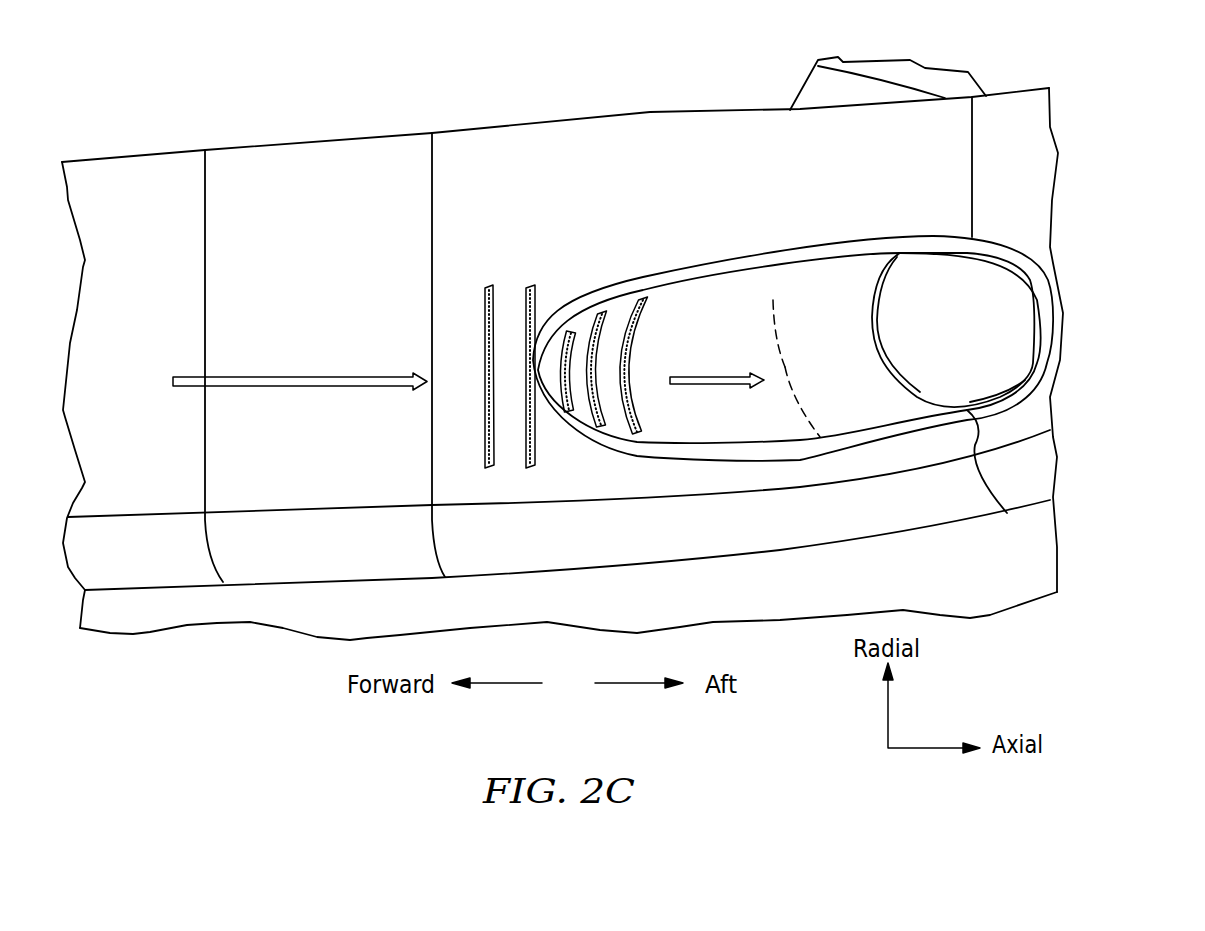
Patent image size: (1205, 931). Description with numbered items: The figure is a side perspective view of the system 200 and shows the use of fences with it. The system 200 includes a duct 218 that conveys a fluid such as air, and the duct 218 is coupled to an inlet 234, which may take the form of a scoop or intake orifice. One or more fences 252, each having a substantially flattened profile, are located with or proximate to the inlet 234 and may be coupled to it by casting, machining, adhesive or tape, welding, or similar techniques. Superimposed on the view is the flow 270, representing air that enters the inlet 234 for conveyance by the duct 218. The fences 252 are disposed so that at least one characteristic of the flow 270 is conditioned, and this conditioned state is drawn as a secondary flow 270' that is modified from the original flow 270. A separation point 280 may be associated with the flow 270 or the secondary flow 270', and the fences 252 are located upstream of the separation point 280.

The system 200 is at (621, 350).
The duct 218 is at (928, 78).
The fence 252 is at (632, 318).
The inlet 234 is at (793, 302).
The flow 270 is at (300, 344).
The secondary flow 270' is at (717, 342).
The separation point 280 is at (797, 407).